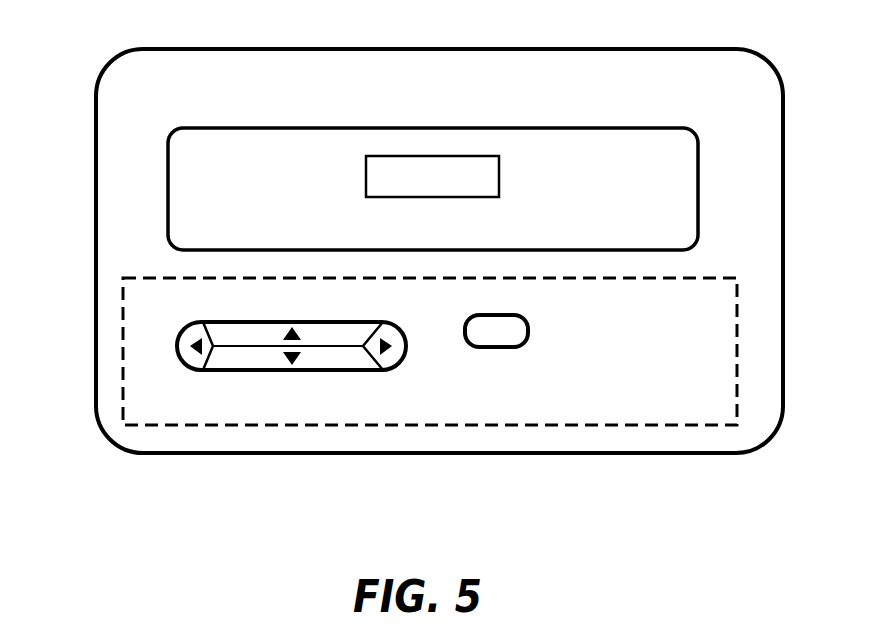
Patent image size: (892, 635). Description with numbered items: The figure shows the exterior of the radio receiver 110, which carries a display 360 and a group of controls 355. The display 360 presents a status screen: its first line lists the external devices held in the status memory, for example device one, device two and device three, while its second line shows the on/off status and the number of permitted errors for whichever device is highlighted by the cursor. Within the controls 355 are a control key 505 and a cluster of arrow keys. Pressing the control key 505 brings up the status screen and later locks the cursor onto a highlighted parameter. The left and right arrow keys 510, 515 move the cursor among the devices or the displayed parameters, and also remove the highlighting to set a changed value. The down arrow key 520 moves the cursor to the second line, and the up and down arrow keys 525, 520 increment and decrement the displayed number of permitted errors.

The radio receiver 110 is at (358, 558).
The display 360 is at (268, 128).
The controls 355 is at (607, 428).
The control key 505 is at (498, 315).
The left arrow key 510 is at (177, 347).
The right arrow key 515 is at (407, 350).
The down arrow key 520 is at (298, 370).
The up arrow key 525 is at (320, 322).